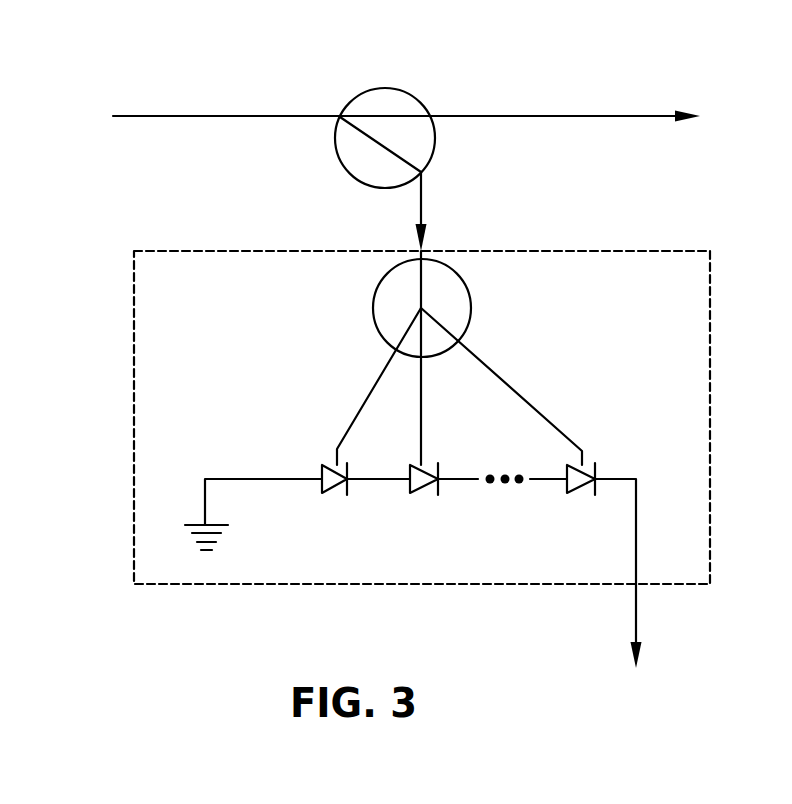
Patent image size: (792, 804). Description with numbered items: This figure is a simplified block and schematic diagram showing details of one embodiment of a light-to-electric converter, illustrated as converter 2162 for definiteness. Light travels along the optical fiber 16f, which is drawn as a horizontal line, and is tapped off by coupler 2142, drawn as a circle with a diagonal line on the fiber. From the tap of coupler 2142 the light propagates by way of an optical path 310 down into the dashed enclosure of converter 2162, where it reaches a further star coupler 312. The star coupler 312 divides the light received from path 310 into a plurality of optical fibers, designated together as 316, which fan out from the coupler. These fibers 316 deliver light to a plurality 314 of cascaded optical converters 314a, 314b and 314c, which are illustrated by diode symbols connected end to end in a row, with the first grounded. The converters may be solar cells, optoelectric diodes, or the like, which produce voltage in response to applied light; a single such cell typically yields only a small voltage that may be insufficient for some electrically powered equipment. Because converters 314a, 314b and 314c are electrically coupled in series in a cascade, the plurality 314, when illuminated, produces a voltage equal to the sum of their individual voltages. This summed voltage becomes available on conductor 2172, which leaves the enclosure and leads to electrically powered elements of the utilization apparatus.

The optical fiber 16f is at (232, 116).
The coupler 2142 is at (369, 88).
The optical path 310 is at (423, 195).
The light-to-electric converter 2162 is at (132, 285).
The star coupler 312 is at (372, 282).
The plurality of optical fibers 316 is at (560, 345).
The plurality of cascaded optical converters 314 is at (422, 486).
The optical converter 314a is at (350, 485).
The optical converter 314b is at (440, 485).
The optical converter 314c is at (613, 450).
The conductor 2172 is at (638, 600).